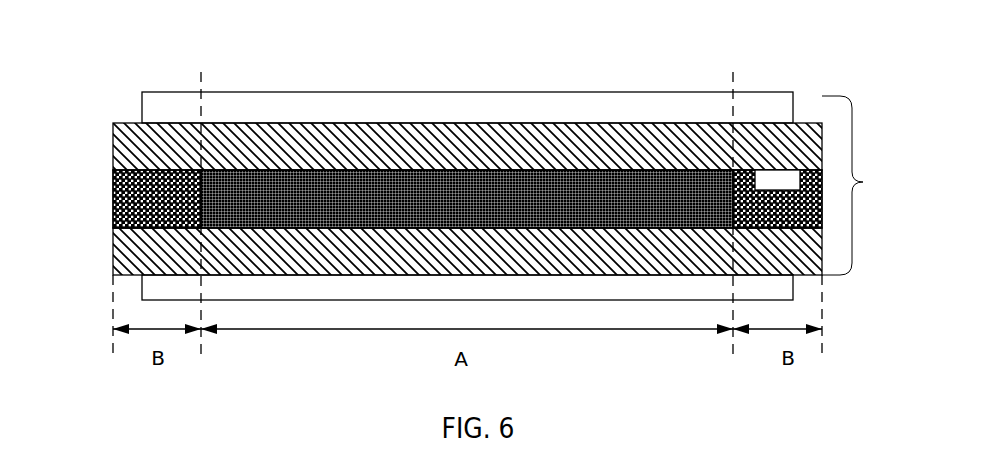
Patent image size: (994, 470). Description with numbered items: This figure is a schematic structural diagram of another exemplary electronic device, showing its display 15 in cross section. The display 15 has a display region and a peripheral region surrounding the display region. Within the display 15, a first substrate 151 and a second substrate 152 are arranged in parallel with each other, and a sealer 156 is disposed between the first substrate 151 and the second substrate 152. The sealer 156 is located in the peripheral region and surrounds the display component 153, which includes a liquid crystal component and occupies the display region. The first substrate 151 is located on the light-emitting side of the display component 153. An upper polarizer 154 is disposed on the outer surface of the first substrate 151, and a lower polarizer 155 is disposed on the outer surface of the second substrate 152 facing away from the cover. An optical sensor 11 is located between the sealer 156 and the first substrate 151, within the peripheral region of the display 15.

The upper polarizer 154 is at (134, 107).
The first substrate 151 is at (132, 146).
The display component 153 is at (242, 196).
The second substrate 152 is at (132, 247).
The lower polarizer 155 is at (130, 292).
The sealer 156 is at (185, 162).
The optical sensor 11 is at (775, 163).
The display 15 is at (869, 185).